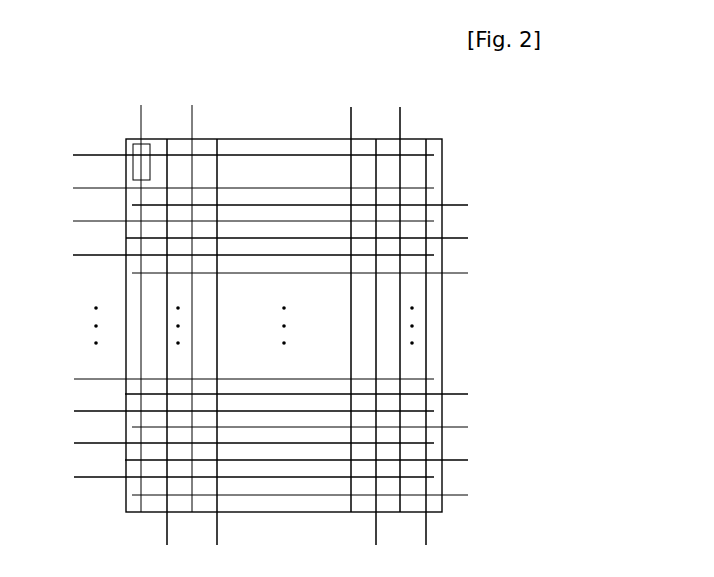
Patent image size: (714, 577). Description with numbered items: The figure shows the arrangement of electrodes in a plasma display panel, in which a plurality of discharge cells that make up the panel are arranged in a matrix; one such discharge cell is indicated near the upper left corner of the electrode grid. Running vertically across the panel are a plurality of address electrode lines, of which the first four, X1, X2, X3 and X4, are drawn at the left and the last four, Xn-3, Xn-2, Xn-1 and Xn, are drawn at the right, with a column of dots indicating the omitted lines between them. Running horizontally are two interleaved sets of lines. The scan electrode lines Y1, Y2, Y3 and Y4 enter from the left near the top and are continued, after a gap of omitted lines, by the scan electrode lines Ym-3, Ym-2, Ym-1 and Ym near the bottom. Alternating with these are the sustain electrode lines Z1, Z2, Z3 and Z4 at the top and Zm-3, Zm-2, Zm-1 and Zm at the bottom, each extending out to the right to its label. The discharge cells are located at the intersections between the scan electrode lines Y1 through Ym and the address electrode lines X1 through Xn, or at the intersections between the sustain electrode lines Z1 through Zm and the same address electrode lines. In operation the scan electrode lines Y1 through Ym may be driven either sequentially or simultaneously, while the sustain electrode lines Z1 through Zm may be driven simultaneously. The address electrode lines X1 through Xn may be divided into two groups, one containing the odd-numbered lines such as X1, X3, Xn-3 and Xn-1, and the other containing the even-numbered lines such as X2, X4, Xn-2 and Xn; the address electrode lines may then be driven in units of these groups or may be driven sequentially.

The address electrode line X1 is at (141, 302).
The address electrode line X2 is at (167, 349).
The address electrode line X3 is at (192, 302).
The address electrode line X4 is at (217, 349).
The address electrode line Xn-3 is at (351, 302).
The address electrode line Xn-2 is at (378, 349).
The address electrode line Xn-1 is at (400, 302).
The address electrode line Xn is at (428, 349).
The scan electrode line Y1 is at (243, 155).
The scan electrode line Y2 is at (243, 188).
The scan electrode line Y3 is at (243, 221).
The scan electrode line Y4 is at (243, 255).
The scan electrode line Ym-3 is at (238, 379).
The scan electrode line Ym-2 is at (238, 411).
The scan electrode line Ym-1 is at (238, 443).
The scan electrode line Ym is at (243, 477).
The sustain electrode line Z1 is at (484, 172).
The sustain electrode line Z2 is at (311, 205).
The sustain electrode line Z3 is at (308, 238).
The sustain electrode line Z4 is at (311, 273).
The sustain electrode line Zm-3 is at (315, 394).
The sustain electrode line Zm-2 is at (318, 427).
The sustain electrode line Zm-1 is at (315, 460).
The sustain electrode line Zm is at (313, 495).